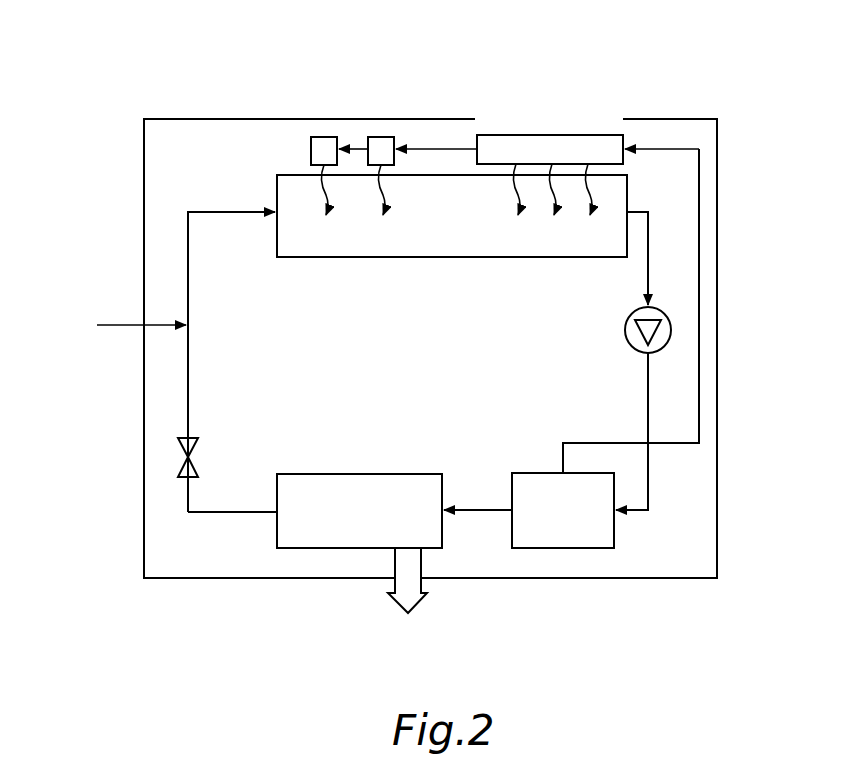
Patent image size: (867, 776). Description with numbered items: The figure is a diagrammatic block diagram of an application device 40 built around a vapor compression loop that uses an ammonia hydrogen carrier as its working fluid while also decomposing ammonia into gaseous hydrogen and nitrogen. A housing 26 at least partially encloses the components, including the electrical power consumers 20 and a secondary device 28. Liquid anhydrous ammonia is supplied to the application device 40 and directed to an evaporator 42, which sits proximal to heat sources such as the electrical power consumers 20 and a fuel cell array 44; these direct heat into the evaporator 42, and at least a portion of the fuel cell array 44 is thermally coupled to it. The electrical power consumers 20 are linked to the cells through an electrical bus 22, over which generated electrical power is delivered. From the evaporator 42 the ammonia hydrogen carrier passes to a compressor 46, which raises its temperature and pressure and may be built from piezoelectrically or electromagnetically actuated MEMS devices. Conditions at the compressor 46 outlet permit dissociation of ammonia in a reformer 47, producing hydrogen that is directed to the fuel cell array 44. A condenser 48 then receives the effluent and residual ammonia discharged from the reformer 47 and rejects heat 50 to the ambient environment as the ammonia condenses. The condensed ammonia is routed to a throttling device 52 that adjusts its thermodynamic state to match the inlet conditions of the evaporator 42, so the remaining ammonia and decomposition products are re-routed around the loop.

The electrical power consumers 20 is at (323, 137).
The electrical bus 22 is at (445, 150).
The housing 26 is at (718, 209).
The secondary device 28 is at (612, 99).
The application device 40 is at (752, 56).
The evaporator 42 is at (452, 257).
The fuel cell array 44 is at (548, 135).
The compressor 46 is at (625, 330).
The reformer 47 is at (562, 548).
The condenser 48 is at (358, 474).
The heat 50 is at (398, 618).
The throttling device 52 is at (196, 462).